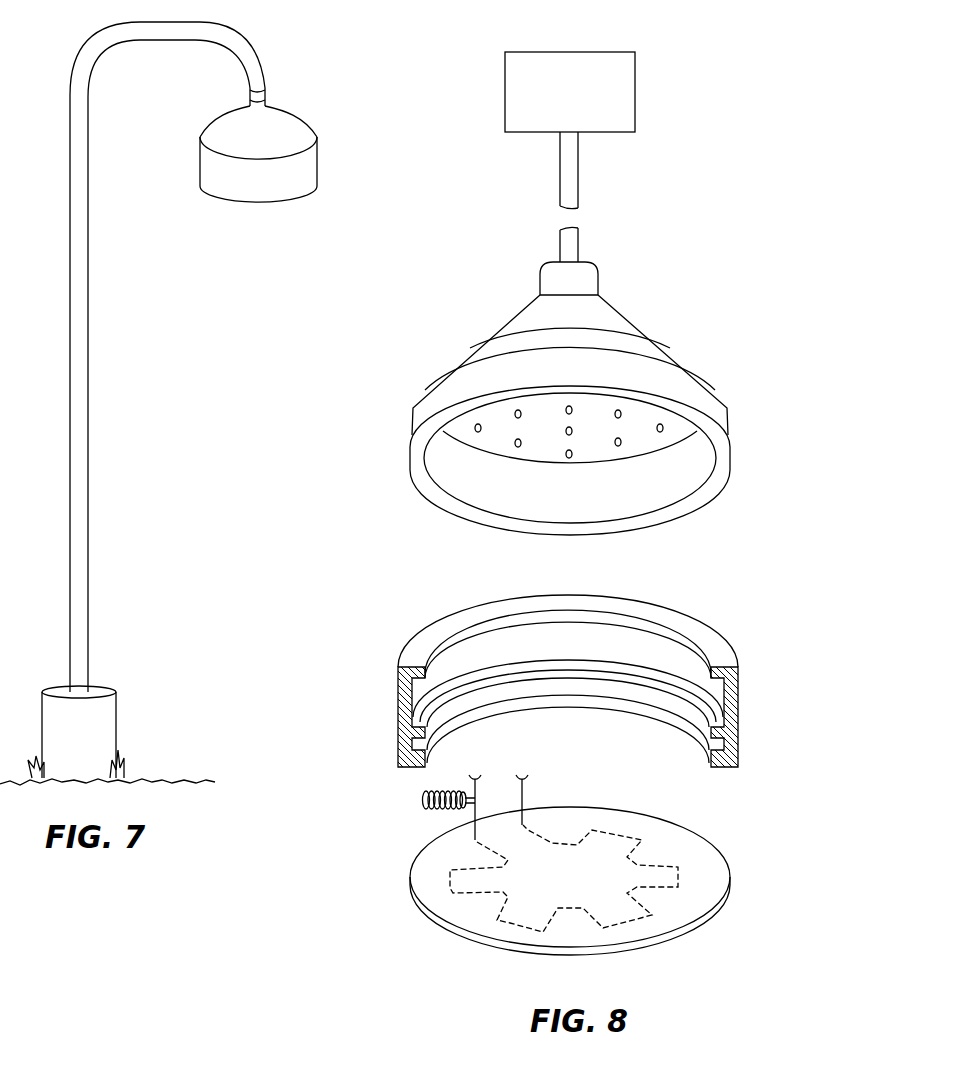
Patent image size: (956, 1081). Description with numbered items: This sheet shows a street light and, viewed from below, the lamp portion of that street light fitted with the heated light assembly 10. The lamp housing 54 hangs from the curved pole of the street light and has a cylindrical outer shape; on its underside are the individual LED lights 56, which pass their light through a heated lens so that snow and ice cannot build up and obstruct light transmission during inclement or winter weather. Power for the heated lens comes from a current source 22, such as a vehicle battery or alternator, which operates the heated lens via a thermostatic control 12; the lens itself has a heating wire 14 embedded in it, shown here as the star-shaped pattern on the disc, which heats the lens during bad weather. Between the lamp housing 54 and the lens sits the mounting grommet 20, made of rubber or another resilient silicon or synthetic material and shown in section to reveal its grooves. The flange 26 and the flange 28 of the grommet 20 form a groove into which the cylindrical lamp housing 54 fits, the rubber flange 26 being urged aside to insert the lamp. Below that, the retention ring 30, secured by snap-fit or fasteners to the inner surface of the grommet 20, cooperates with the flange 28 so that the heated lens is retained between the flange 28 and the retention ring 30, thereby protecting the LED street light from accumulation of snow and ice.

In FIG. 8, the heated light assembly 10 is at (517, 865).
In FIG. 8, the thermostatic control 12 is at (422, 797).
In FIG. 8, the heating wire 14 is at (618, 832).
In FIG. 8, the mounting grommet 20 is at (560, 667).
In FIG. 8, the current source 22 is at (604, 52).
In FIG. 8, the flange 26 is at (448, 625).
In FIG. 8, the flange 28 is at (424, 713).
In FIG. 8, the retention ring 30 is at (420, 748).
In FIG. 7, the lamp housing 54 is at (218, 180).
In FIG. 8, the lamp housing 54 is at (570, 398).
In FIG. 8, the LED lights 56 is at (613, 441).